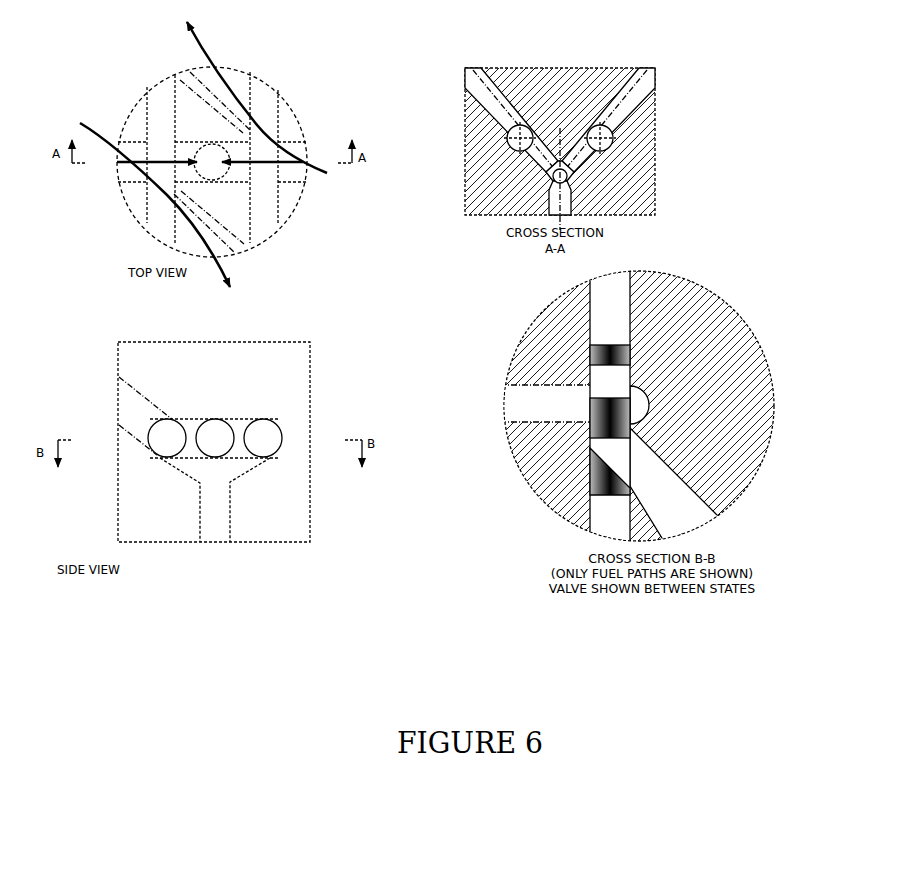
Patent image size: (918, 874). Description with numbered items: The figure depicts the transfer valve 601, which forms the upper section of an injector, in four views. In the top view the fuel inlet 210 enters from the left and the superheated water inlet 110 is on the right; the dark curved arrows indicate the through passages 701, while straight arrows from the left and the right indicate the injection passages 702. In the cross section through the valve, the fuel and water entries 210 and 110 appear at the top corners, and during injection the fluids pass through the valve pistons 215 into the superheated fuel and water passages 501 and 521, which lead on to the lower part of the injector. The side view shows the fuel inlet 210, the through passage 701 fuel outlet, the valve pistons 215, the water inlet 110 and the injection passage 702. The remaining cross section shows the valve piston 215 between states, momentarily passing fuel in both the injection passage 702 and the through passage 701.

The superheated water inlet 110 is at (307, 145).
The fuel inlet 210 is at (123, 175).
The valve piston 215 is at (163, 443).
The superheated fuel passage 501 is at (572, 203).
The superheated water passage 521 is at (548, 203).
The transfer valve 601 is at (740, 77).
The through passage 701 is at (255, 110).
The injection passage 702 is at (262, 158).